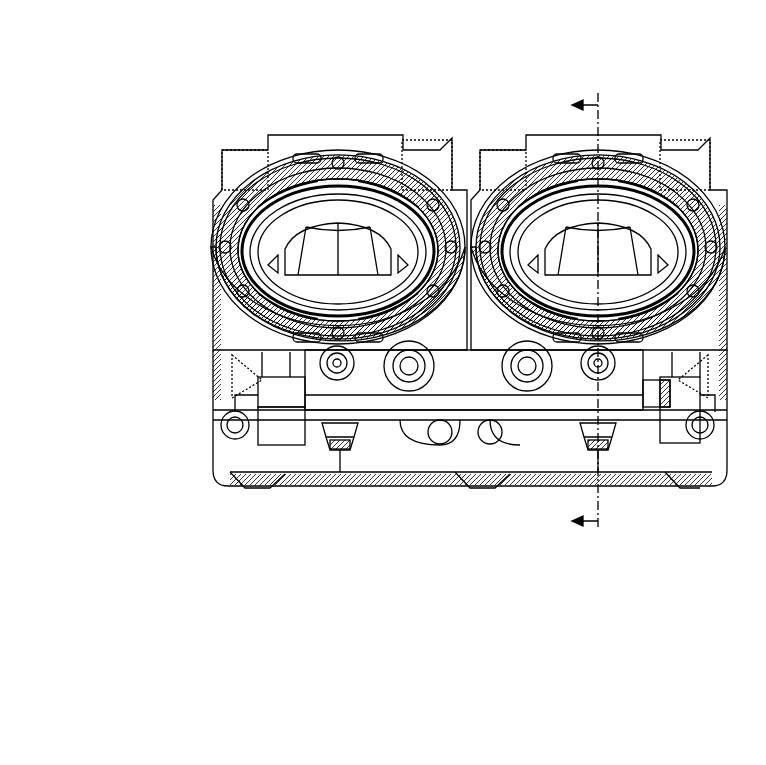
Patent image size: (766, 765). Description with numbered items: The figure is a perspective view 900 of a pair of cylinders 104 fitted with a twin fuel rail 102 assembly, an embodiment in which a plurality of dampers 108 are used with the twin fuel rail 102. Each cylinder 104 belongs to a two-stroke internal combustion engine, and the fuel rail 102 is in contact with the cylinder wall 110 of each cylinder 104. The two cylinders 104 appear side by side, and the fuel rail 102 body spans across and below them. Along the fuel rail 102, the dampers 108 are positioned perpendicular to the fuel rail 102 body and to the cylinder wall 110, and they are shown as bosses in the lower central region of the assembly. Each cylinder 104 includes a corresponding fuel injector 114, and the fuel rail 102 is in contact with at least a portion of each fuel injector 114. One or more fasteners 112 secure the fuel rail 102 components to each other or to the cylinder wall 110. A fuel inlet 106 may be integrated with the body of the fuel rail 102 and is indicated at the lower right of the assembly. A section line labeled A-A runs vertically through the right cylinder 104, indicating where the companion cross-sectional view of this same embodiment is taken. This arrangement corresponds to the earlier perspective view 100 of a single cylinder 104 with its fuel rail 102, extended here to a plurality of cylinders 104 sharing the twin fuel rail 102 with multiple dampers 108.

The perspective view 900 is at (243, 95).
The perspective view 100 is at (489, 312).
The fuel rail 102 is at (312, 393).
The cylinder 104 is at (182, 298).
The fuel inlet 106 is at (675, 405).
The damper 108 is at (410, 378).
The cylinder wall 110 is at (703, 337).
The fastener 112 is at (330, 366).
The fuel injector 114 is at (343, 445).